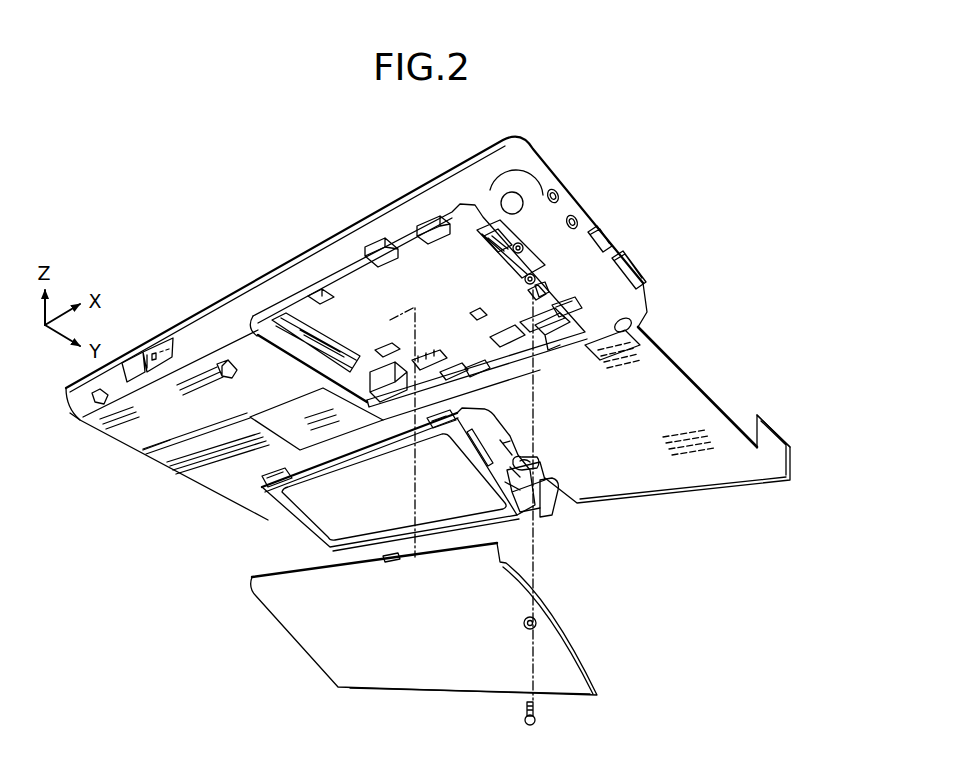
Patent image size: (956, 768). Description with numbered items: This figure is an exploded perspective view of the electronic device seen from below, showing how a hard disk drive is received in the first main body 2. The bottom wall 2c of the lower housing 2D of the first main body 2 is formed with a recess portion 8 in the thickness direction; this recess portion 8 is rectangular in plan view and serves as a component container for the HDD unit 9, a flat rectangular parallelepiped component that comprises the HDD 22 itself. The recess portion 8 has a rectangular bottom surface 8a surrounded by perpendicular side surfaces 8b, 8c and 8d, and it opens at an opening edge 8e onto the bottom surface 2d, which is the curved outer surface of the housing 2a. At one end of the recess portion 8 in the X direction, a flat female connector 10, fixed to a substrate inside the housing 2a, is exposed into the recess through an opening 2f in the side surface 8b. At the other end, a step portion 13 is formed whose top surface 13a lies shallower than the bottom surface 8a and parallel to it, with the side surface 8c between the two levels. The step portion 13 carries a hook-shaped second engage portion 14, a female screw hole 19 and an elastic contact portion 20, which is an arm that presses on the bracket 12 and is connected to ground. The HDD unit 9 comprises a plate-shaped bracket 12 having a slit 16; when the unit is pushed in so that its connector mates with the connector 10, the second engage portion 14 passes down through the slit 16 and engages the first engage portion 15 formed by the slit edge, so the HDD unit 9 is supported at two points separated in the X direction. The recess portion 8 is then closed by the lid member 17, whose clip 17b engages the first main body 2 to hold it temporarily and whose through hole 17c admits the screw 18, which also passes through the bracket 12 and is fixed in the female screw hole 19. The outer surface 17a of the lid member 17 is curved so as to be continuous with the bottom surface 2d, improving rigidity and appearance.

The first main body 2 is at (428, 328).
The lower housing 2D is at (653, 287).
The housing 2a is at (187, 333).
The bottom wall 2c is at (160, 470).
The bottom surface 2d is at (170, 430).
The opening 2f is at (300, 348).
The recess portion 8 is at (345, 288).
The bottom surface 8a is at (428, 258).
The side surface 8b is at (333, 360).
The side surface 8c is at (545, 340).
The side surface 8d is at (452, 372).
The opening edge 8e is at (610, 360).
The HDD unit 9 is at (278, 505).
The connector 10 is at (286, 308).
The bracket 12 is at (552, 505).
The step portion 13 is at (651, 248).
The top surface 13a is at (595, 238).
The second engage portion 14 is at (547, 286).
The first engage portion 15 is at (540, 462).
The slit 16 is at (551, 483).
The lid member 17 is at (297, 655).
The outer surface 17a is at (421, 686).
The clip 17b is at (383, 555).
The through hole 17c is at (537, 623).
The screw 18 is at (537, 720).
The female screw hole 19 is at (533, 292).
The elastic contact portion 20 is at (477, 228).
The HDD 22 is at (313, 505).